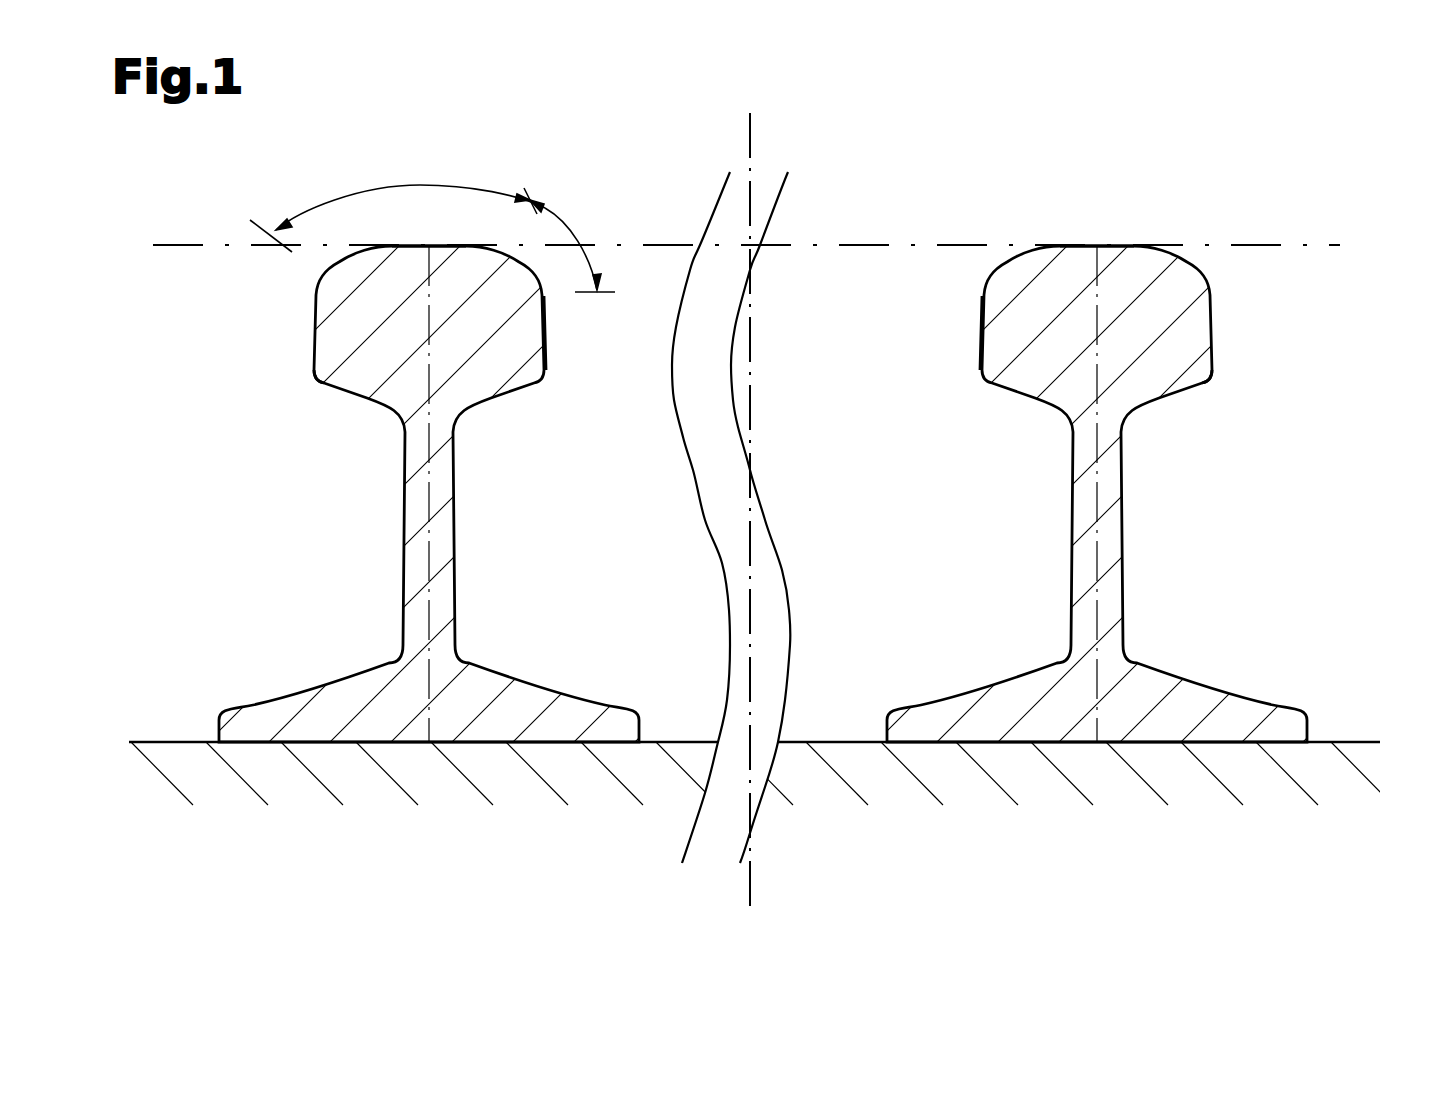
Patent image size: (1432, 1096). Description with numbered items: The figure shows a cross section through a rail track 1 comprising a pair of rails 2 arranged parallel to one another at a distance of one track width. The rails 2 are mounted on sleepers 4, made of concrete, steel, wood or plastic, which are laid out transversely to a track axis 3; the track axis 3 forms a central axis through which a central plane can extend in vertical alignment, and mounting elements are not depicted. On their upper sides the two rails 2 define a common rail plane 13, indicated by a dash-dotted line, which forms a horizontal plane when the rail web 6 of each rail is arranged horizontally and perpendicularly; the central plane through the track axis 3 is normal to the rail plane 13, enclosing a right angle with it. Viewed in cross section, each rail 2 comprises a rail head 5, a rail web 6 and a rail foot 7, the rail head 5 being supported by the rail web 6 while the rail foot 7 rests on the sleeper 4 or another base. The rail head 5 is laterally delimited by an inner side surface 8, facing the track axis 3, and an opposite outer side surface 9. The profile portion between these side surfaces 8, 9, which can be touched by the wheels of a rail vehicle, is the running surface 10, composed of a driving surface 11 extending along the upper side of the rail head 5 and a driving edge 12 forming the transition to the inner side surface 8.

The rail track 1 is at (1250, 162).
The rails 2 is at (233, 228).
The track axis 3 is at (755, 135).
The sleepers 4 is at (1347, 733).
The rail head 5 is at (283, 318).
The rail web 6 is at (369, 524).
The rail foot 7 is at (283, 680).
The inner side surface 8 is at (550, 322).
The outer side surface 9 is at (310, 357).
The running surface 10 is at (447, 243).
The driving surface 11 is at (422, 185).
The driving edge 12 is at (580, 232).
The rail plane 13 is at (671, 244).